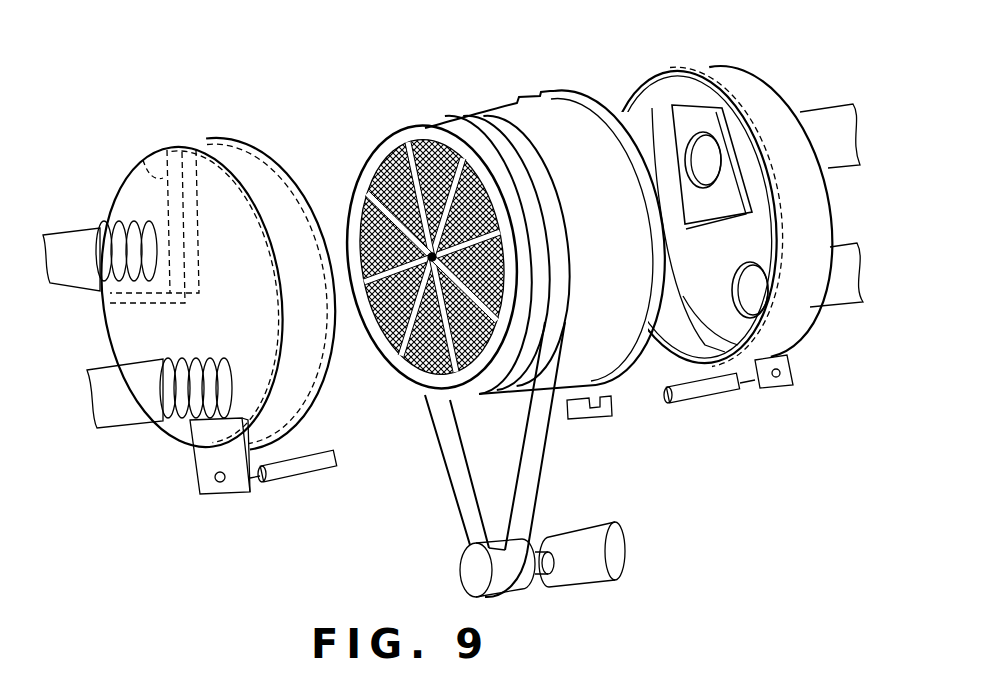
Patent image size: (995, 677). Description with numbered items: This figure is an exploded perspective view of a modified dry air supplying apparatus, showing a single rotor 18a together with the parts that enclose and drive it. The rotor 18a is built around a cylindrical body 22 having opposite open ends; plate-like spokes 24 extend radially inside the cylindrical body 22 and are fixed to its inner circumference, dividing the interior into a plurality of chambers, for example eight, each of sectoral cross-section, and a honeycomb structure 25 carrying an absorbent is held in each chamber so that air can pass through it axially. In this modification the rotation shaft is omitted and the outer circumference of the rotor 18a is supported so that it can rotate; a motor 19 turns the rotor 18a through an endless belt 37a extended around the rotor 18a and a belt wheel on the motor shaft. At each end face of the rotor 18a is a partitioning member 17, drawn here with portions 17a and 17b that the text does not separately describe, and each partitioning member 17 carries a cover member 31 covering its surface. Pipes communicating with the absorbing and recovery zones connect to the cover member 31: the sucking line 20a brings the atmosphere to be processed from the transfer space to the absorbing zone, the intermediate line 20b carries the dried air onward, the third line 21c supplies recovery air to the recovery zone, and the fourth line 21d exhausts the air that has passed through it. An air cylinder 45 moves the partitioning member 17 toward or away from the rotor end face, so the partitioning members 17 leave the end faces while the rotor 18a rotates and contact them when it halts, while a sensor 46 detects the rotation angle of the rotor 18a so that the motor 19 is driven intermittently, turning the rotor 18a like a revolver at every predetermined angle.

The partitioning member 17 is at (757, 18).
The flange of end cap 17a is at (227, 147).
The mounting plate of end cap 17b is at (140, 157).
The rotor 18a is at (407, 225).
The motor 19 is at (600, 571).
The sucking line 20a is at (133, 417).
The intermediate line 20b is at (843, 293).
The third line 21c is at (827, 118).
The fourth line 21d is at (78, 243).
The cylindrical body 22 is at (517, 120).
The plate-like spokes 24 is at (364, 188).
The honeycomb structures 25 is at (428, 142).
The cover member 31 is at (133, 330).
The endless belt 37a is at (453, 482).
The air cylinder 45 is at (303, 472).
The sensor 46 is at (605, 420).